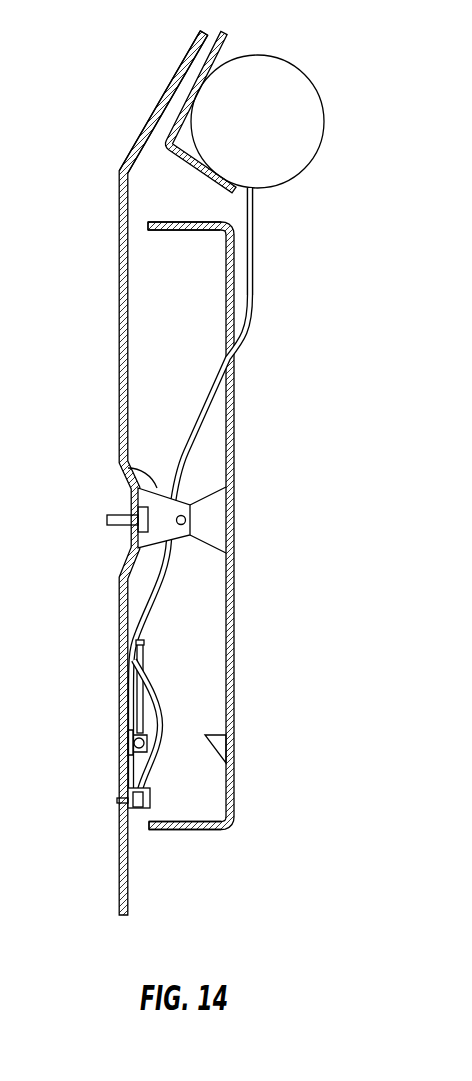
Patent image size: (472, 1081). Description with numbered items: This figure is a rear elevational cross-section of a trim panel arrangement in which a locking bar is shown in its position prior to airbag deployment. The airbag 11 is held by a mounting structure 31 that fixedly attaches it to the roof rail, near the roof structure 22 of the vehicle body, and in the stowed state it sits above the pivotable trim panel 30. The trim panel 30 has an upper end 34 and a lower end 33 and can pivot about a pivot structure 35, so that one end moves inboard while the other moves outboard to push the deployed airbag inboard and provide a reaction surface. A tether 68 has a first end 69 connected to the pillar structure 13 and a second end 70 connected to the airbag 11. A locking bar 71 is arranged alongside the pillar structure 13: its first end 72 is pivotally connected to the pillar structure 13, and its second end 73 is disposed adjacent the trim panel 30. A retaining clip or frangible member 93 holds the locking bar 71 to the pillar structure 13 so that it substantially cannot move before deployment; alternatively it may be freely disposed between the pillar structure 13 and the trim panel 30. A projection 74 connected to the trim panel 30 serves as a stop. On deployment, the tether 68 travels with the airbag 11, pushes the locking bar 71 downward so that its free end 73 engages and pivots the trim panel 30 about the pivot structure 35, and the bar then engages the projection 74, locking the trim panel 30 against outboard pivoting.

The airbag 11 is at (323, 114).
The pillar structure 13 is at (118, 228).
The roof structure 22 is at (142, 133).
The trim panel 30 is at (234, 692).
The mounting structure 31 is at (233, 46).
The lower end 33 is at (193, 830).
The upper end 34 is at (212, 222).
The pivot structure 35 is at (128, 468).
The tether 68 is at (188, 452).
The first end 69 is at (127, 797).
The second end 70 is at (254, 187).
The locking bar 71 is at (131, 690).
The first end 72 is at (131, 731).
The second end 73 is at (143, 664).
The projection 74 is at (213, 752).
The frangible member 93 is at (144, 645).